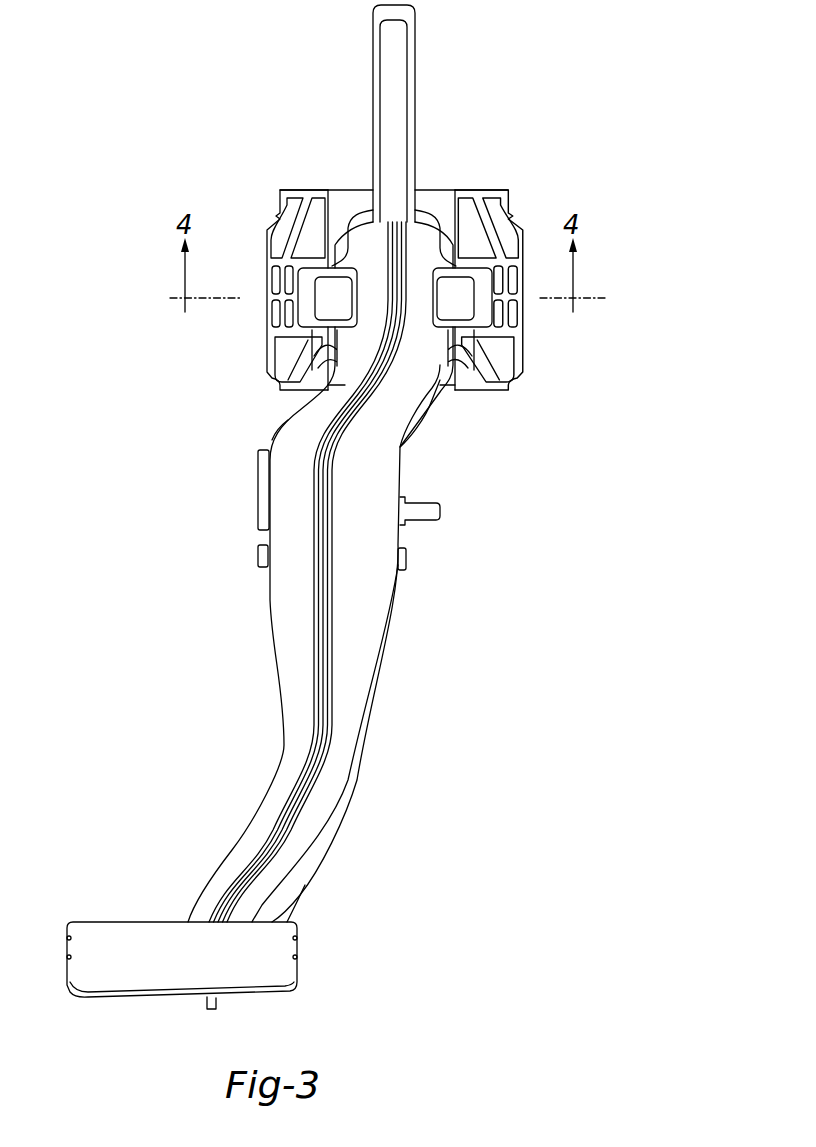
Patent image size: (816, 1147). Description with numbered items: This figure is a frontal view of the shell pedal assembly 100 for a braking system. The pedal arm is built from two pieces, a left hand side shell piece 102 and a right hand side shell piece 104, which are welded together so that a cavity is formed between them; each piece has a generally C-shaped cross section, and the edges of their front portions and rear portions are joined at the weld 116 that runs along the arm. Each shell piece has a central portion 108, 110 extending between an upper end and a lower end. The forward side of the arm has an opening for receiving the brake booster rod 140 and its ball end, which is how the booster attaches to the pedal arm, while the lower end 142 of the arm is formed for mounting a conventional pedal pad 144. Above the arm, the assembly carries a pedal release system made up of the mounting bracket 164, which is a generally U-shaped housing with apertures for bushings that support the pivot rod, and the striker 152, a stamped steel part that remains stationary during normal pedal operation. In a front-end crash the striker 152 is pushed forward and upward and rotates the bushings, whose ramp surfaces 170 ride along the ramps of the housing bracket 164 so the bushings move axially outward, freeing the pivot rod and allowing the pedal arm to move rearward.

The shell pedal assembly 100 is at (217, 388).
The left hand side shell piece 102 is at (298, 603).
The right hand side shell piece 104 is at (347, 714).
The central portion 108 is at (310, 760).
The central portion 110 is at (314, 778).
The weld 116 is at (330, 657).
The brake booster rod 140 is at (424, 510).
The lower end 142 is at (263, 905).
The pedal pad 144 is at (263, 965).
The striker 152 is at (412, 69).
The mounting bracket 164 is at (505, 192).
The ramp surface 170 is at (450, 303).